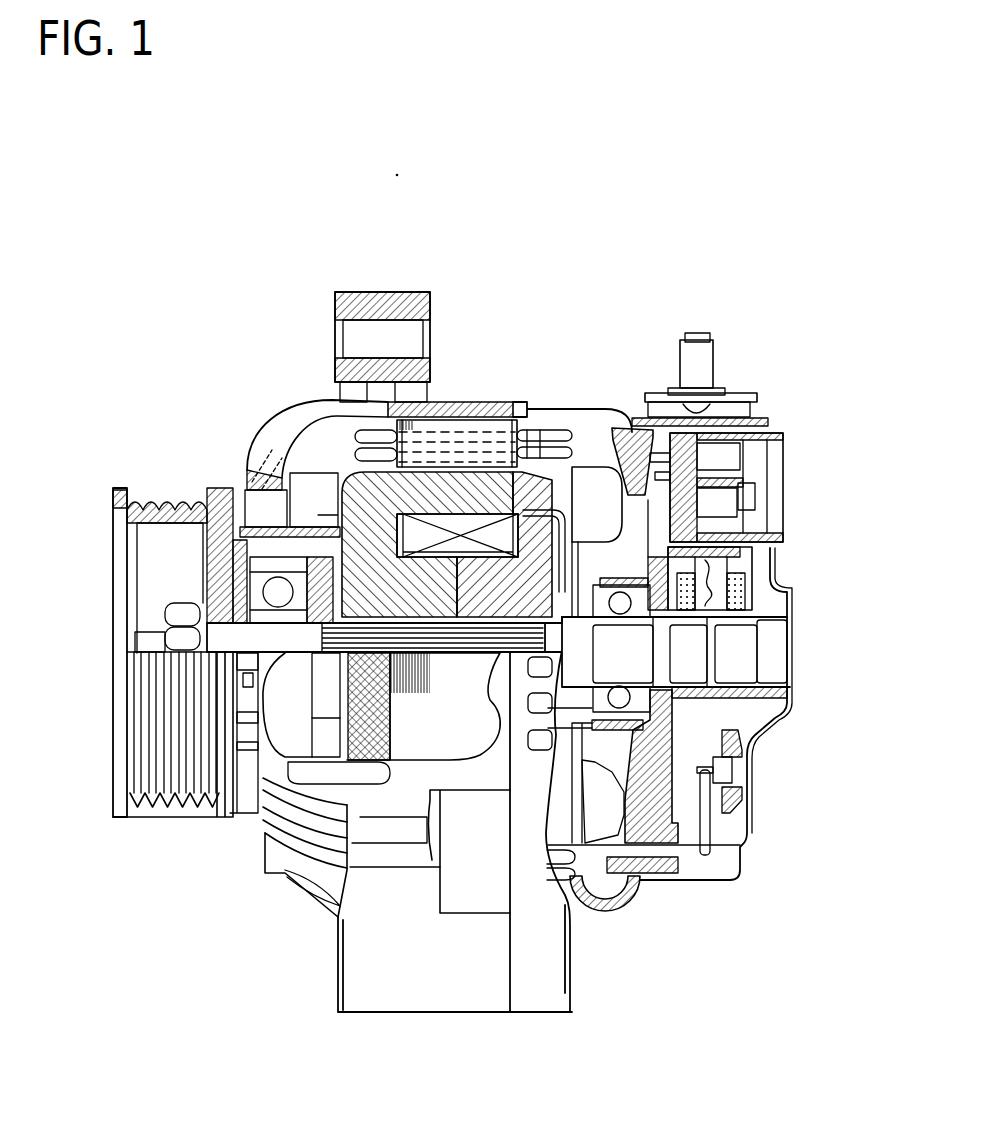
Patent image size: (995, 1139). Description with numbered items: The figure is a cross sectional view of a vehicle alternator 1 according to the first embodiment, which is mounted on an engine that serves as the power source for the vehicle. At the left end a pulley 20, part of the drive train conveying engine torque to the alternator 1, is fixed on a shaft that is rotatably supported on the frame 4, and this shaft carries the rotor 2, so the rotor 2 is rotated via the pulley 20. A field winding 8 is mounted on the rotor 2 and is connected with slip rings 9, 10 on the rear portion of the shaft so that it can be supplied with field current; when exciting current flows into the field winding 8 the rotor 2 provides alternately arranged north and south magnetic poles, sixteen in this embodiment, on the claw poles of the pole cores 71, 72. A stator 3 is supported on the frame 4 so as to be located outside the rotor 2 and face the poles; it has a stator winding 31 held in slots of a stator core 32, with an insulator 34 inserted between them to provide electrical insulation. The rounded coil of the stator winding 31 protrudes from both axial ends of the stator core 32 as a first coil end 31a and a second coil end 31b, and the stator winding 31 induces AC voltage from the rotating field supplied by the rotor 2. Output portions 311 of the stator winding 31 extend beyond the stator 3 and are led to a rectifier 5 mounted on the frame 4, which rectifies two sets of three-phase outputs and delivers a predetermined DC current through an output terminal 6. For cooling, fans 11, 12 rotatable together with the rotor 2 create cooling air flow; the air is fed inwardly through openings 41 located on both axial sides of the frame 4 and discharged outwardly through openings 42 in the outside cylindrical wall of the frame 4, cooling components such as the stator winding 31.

The alternator 1 is at (674, 293).
The rotor 2 is at (290, 425).
The stator 3 is at (584, 420).
The frame 4 is at (470, 404).
The rectifier 5 is at (723, 768).
The output terminal 6 is at (702, 363).
The field winding 8 is at (463, 523).
The slip ring 9 is at (690, 663).
The slip ring 10 is at (737, 645).
The fan 11 is at (263, 508).
The fan 12 is at (673, 525).
The pulley 20 is at (140, 510).
The stator winding 31 is at (553, 412).
The first coil end 31a is at (540, 432).
The second coil end 31b is at (313, 415).
The stator core 32 is at (435, 422).
The insulator 34 is at (335, 402).
The opening 41 is at (238, 550).
The opening 42 is at (333, 443).
The pole core 71 is at (600, 562).
The pole core 72 is at (300, 440).
The output portion 311 is at (620, 907).